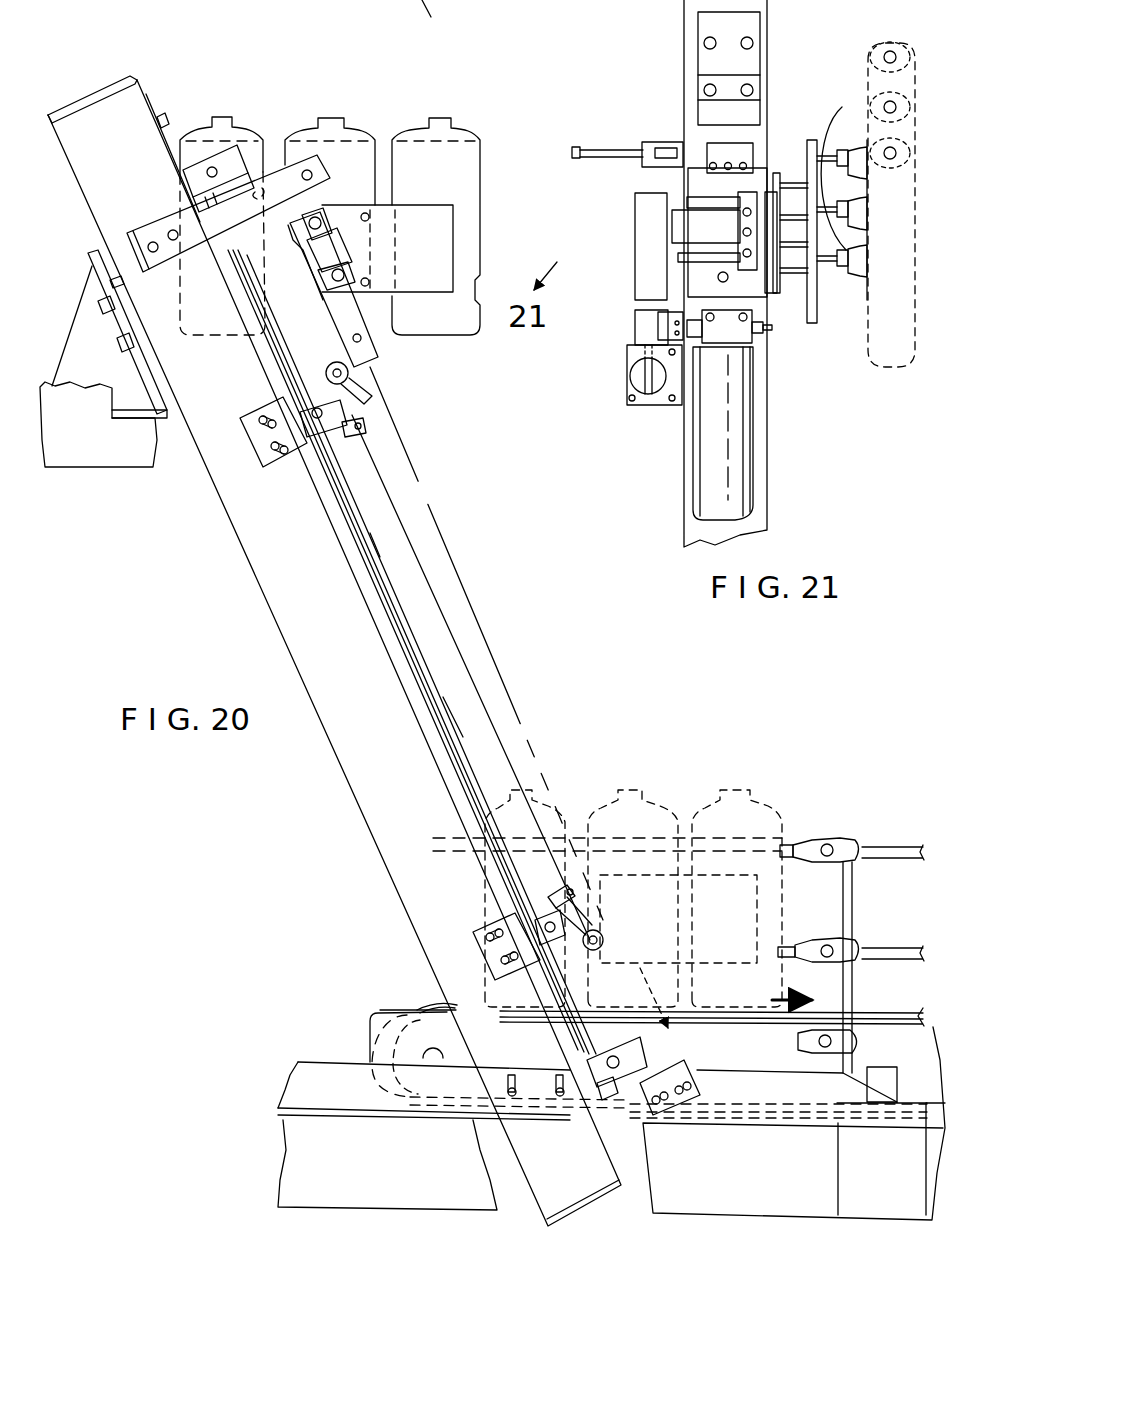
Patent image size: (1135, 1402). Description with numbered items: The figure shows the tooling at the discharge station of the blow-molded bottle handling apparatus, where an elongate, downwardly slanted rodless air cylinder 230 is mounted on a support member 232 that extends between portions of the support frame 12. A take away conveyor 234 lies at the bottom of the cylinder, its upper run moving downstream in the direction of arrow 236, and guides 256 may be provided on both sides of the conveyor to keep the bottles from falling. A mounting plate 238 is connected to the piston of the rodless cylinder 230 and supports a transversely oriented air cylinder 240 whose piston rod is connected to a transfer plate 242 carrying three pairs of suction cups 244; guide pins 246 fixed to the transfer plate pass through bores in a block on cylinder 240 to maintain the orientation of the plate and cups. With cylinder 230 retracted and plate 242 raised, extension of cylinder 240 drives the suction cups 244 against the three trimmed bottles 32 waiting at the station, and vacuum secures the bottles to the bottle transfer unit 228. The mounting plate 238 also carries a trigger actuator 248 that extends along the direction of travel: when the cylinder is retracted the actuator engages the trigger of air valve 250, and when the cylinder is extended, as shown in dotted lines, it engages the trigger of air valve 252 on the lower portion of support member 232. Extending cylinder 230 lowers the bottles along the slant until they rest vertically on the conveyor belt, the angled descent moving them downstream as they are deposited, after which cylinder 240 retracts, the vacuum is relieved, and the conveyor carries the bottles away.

In FIG. 20, the support frame 12 is at (87, 455).
In FIG. 20, the bottles 32 is at (197, 125).
In FIG. 21, the bottles 32 is at (912, 65).
In FIG. 20, the bottle transfer unit 228 is at (121, 35).
In FIG. 20, the rodless air cylinder 230 is at (377, 563).
In FIG. 21, the rodless air cylinder 230 is at (700, 430).
In FIG. 20, the support member 232 is at (237, 521).
In FIG. 21, the support member 232 is at (685, 497).
In FIG. 20, the take away conveyor 234 is at (365, 1040).
In FIG. 20, the arrow 236 is at (787, 1003).
In FIG. 21, the mounting plate 238 is at (642, 298).
In FIG. 20, the air cylinder 240 is at (343, 246).
In FIG. 21, the air cylinder 240 is at (678, 228).
In FIG. 20, the transfer plate 242 is at (444, 279).
In FIG. 21, the transfer plate 242 is at (812, 140).
In FIG. 21, the suction cups 244 is at (837, 187).
In FIG. 20, the guide pins 246 is at (325, 206).
In FIG. 21, the guide pins 246 is at (688, 200).
In FIG. 20, the trigger actuator 248 is at (332, 353).
In FIG. 21, the trigger actuator 248 is at (640, 305).
In FIG. 20, the air valve 250 is at (332, 428).
In FIG. 21, the air valve 250 is at (627, 378).
In FIG. 20, the air valve 252 is at (542, 913).
In FIG. 20, the guides 256 is at (815, 840).